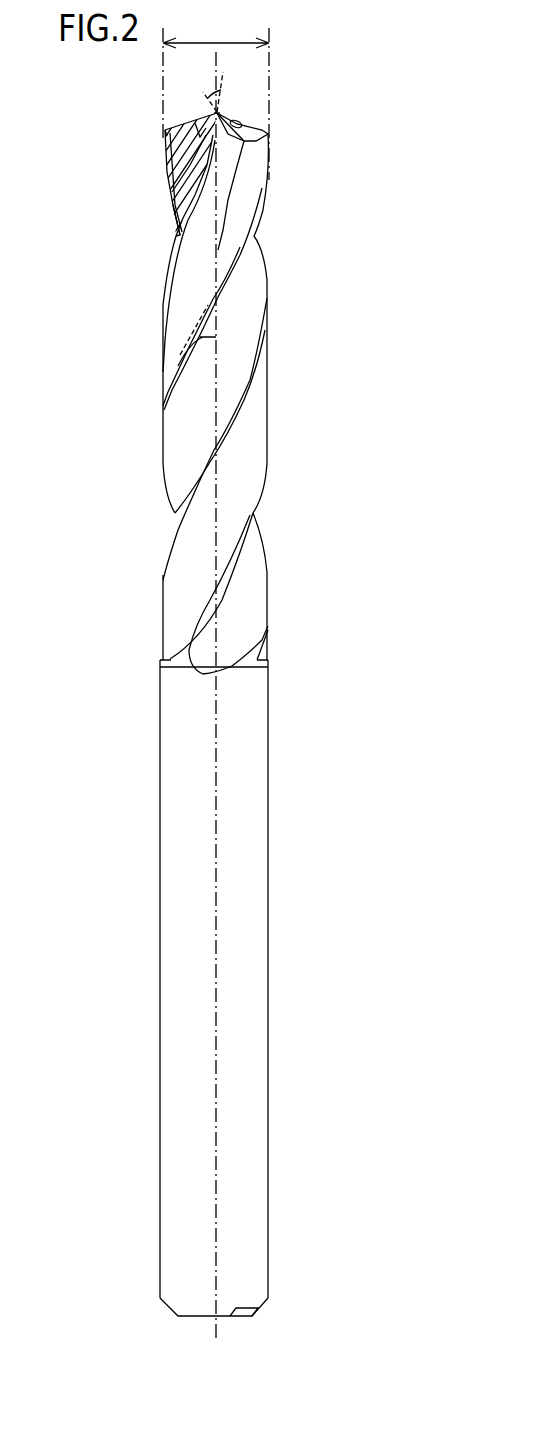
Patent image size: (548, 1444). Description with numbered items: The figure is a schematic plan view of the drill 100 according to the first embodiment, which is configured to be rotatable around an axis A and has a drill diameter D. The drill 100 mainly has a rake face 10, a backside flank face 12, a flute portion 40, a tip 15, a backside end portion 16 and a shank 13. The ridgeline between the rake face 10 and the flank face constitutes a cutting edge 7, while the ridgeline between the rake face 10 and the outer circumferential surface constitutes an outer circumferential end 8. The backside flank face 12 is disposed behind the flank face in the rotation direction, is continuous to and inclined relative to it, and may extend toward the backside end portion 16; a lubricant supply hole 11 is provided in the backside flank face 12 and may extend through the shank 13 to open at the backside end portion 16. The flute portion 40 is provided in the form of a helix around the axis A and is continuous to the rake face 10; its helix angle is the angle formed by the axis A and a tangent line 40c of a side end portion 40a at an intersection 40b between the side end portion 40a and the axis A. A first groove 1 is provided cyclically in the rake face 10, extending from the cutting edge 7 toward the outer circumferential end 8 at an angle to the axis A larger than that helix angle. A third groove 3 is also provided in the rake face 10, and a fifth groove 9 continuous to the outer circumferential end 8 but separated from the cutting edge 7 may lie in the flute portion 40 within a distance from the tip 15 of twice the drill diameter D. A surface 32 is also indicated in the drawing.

The drill 100 is at (347, 135).
The shank 13 is at (240, 1103).
The backside end portion 16 is at (226, 1318).
The axis A is at (218, 895).
The drill diameter D is at (216, 101).
The first groove 1 is at (168, 150).
The third groove 3 is at (172, 190).
The cutting edge 7 is at (165, 130).
The outer circumferential end 8 is at (164, 140).
The fifth groove 9 is at (173, 210).
The rake face 10 is at (172, 172).
The lubricant supply hole 11 is at (241, 121).
The backside flank face 12 is at (259, 133).
The tip 15 is at (217, 111).
The rake face 32 is at (238, 195).
The flute portion 40 is at (245, 283).
The side end portion 40a is at (176, 246).
The intersection 40b is at (219, 298).
The tangent line 40c is at (241, 252).